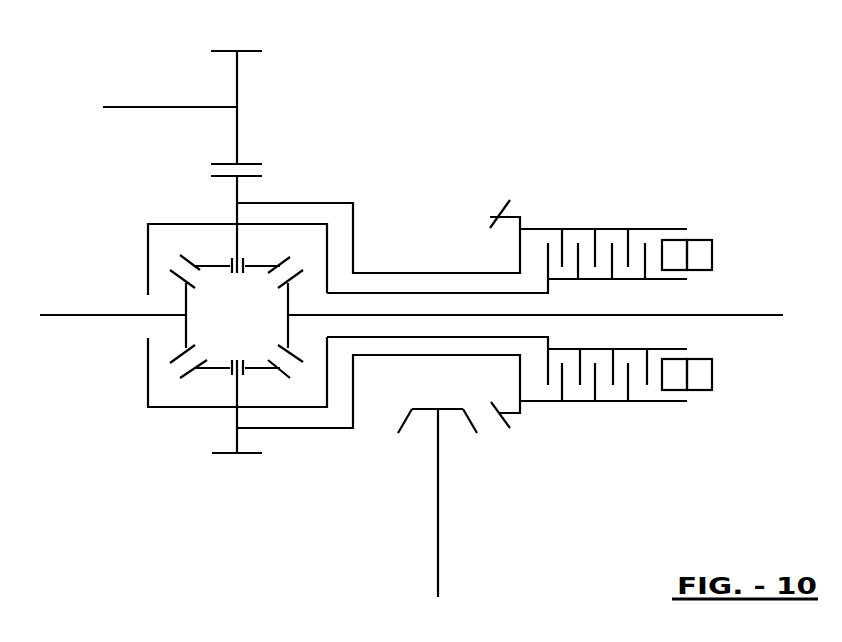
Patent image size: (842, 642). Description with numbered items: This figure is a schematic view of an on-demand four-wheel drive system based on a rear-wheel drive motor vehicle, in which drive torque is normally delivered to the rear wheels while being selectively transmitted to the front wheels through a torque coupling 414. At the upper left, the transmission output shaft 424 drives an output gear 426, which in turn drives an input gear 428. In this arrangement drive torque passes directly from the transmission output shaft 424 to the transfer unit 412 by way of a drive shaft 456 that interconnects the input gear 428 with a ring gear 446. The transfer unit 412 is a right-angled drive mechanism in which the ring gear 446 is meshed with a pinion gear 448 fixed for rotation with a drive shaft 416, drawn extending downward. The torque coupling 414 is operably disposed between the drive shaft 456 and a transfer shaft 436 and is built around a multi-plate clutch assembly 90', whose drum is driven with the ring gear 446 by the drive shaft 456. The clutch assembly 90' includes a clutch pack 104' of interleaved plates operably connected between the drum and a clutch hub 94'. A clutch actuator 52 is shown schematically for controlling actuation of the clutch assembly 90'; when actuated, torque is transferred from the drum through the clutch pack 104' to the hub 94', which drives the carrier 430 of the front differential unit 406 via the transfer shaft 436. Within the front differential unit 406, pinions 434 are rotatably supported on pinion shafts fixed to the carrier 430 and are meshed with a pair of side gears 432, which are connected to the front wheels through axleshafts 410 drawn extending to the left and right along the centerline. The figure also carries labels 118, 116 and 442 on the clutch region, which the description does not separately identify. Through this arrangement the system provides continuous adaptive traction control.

The output gear 426 is at (223, 50).
The transmission output shaft 424 is at (128, 107).
The carrier 430 is at (190, 223).
The pinions 434 is at (245, 262).
The side gears 432 is at (287, 332).
The transfer shaft 436 is at (382, 293).
The ring gear 446 is at (500, 212).
The axleshafts 410 is at (75, 313).
The multi-plate clutch assembly 90' is at (631, 206).
The clutch pack 104' is at (606, 213).
The clutch hub 94' is at (623, 277).
The clutch actuator 118 is at (677, 245).
The clutch actuator 52 is at (729, 251).
The torque coupling 414 is at (768, 176).
The second clutch 442 is at (612, 402).
The clutch actuator 116 is at (702, 373).
The input gear 428 is at (247, 457).
The drive shaft 456 is at (445, 357).
The pinion gear 448 is at (432, 408).
The drive shaft 416 is at (438, 565).
The transfer unit 412 is at (500, 445).
The front differential unit 406 is at (155, 427).